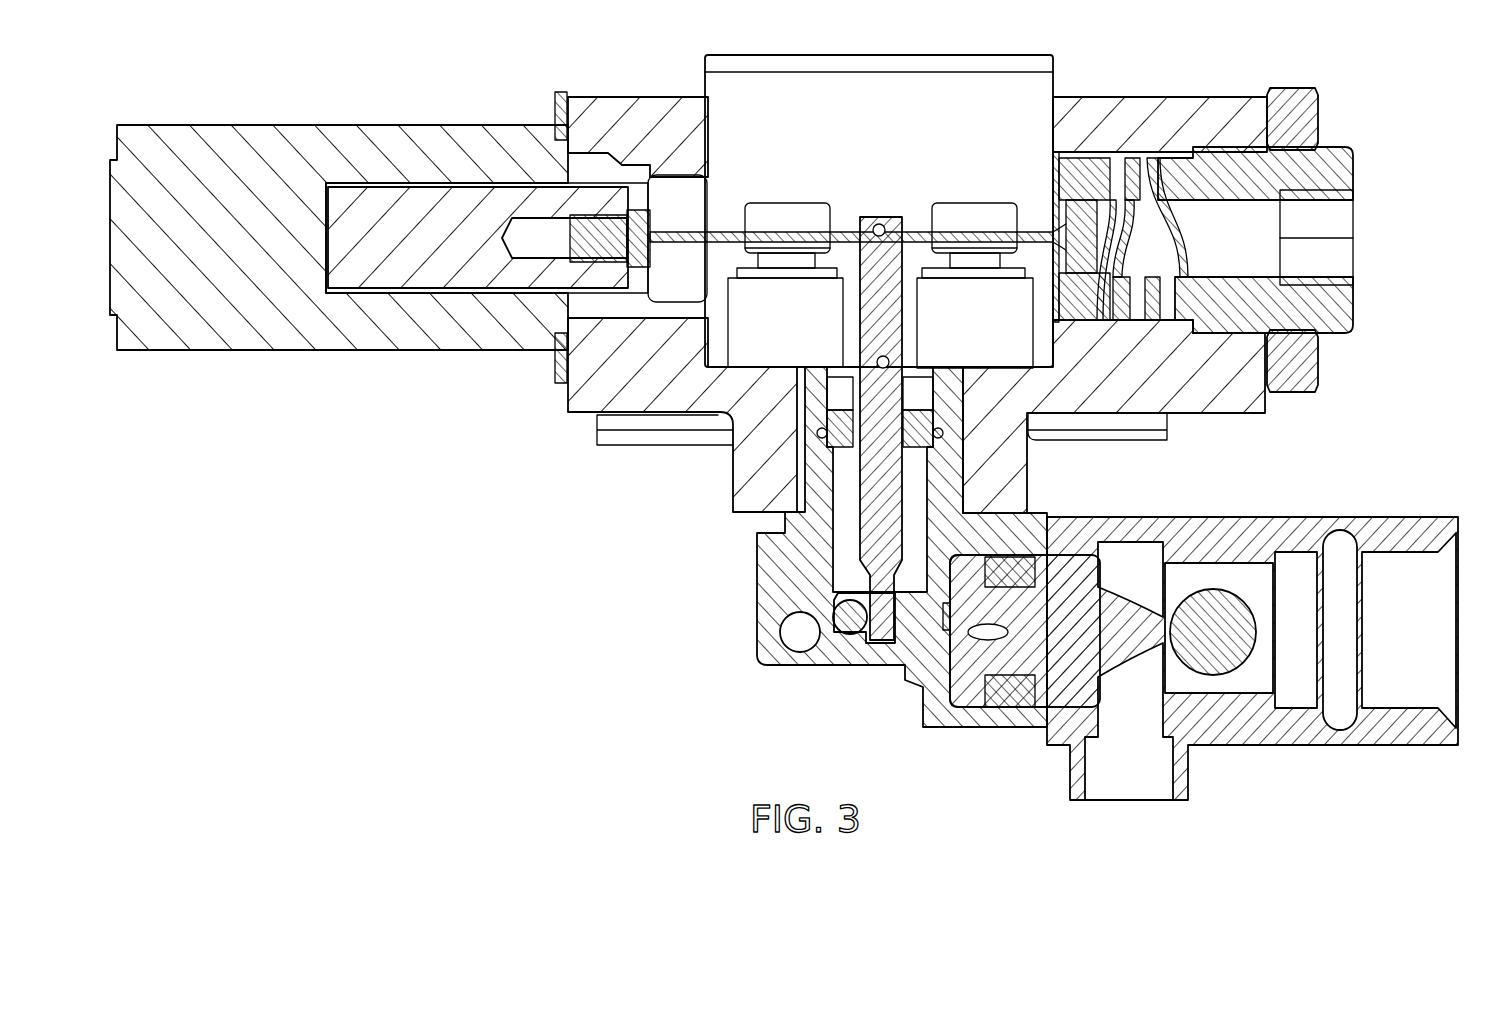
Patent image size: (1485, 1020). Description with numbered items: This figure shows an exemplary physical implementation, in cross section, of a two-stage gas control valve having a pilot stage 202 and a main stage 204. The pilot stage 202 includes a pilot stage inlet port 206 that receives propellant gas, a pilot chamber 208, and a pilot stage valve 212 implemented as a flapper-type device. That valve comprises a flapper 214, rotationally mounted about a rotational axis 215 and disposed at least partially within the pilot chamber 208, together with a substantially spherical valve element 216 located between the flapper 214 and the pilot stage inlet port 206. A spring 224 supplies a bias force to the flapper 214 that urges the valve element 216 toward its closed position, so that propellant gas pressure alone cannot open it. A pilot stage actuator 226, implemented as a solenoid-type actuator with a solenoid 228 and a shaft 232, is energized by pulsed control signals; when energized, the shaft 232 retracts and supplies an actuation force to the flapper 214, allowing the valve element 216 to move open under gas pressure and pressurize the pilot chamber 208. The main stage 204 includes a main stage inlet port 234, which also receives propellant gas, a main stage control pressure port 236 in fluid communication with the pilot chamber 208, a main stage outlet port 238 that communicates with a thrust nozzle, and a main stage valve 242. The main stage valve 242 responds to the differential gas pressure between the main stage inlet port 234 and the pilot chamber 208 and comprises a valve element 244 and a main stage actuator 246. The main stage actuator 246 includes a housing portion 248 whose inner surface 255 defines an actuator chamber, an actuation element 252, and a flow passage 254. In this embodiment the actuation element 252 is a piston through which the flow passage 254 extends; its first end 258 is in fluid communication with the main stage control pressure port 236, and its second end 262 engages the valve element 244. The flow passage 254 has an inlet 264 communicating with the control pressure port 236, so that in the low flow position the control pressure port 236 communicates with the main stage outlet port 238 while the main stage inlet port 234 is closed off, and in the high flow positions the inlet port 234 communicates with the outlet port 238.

The pilot stage 202 is at (724, 549).
The main stage 204 is at (1318, 502).
The pilot stage inlet port 206 is at (787, 630).
The pilot chamber 208 is at (965, 462).
The pilot stage valve 212 is at (830, 485).
The flapper 214 is at (867, 550).
The rotational axis 215 is at (890, 363).
The valve element 216 is at (843, 627).
The spring 224 is at (1138, 158).
The pilot stage actuator 226 is at (327, 106).
The solenoid 228 is at (388, 287).
The shaft 232 is at (870, 236).
The main stage inlet port 234 is at (1393, 702).
The main stage control pressure port 236 is at (908, 665).
The main stage outlet port 238 is at (1130, 790).
The main stage valve 242 is at (1160, 531).
The valve element 244 is at (1257, 625).
The main stage actuator 246 is at (985, 738).
The housing portion 248 is at (1073, 553).
The actuation element 252 is at (1092, 622).
The flow passage 254 is at (1003, 637).
The inner surface 255 is at (1075, 548).
The first end 258 is at (927, 703).
The second end 262 is at (1185, 668).
The inlet 264 is at (951, 618).